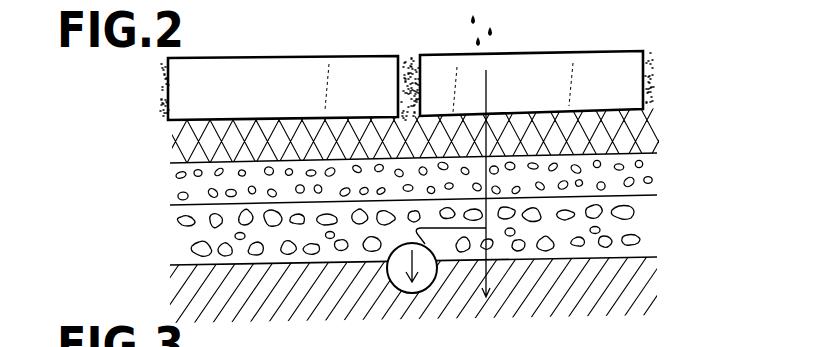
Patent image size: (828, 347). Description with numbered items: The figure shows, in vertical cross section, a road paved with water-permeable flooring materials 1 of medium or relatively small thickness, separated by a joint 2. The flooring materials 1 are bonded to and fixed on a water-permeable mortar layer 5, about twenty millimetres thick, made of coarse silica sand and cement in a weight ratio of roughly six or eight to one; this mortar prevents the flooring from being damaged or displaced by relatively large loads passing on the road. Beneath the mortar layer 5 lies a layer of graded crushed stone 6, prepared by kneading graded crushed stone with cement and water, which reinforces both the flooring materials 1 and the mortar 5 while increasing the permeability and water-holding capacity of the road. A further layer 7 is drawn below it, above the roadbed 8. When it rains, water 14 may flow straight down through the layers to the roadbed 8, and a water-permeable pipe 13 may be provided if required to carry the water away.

The water-permeable flooring material 1 is at (289, 70).
The joint 2 is at (412, 58).
The water-permeable mortar layer 5 is at (642, 141).
The layer of graded crushed stone 6 is at (647, 178).
The coarse gravel layer 7 is at (645, 232).
The roadbed 8 is at (633, 290).
The water-permeable pipe 13 is at (398, 280).
The water 14 is at (483, 22).